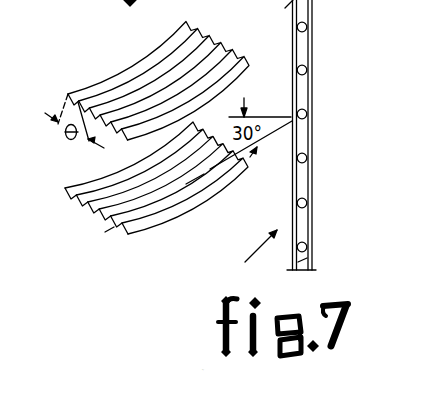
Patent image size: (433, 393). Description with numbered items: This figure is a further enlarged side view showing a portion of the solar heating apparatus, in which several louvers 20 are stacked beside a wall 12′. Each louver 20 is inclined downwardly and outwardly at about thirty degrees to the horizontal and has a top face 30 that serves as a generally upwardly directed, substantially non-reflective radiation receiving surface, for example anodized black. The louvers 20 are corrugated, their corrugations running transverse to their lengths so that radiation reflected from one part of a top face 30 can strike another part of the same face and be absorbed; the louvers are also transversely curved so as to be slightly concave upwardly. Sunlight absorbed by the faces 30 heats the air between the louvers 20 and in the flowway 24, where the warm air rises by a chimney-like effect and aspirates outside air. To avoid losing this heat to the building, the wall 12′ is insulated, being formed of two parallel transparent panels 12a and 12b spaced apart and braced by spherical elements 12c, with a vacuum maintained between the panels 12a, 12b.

The louver 20 is at (234, 78).
The top face 30 is at (138, 77).
The flowway 24 is at (270, 197).
The wall 12′ is at (284, 137).
The panel 12a is at (298, 147).
The panel 12b is at (307, 25).
The spherical element 12c is at (306, 70).